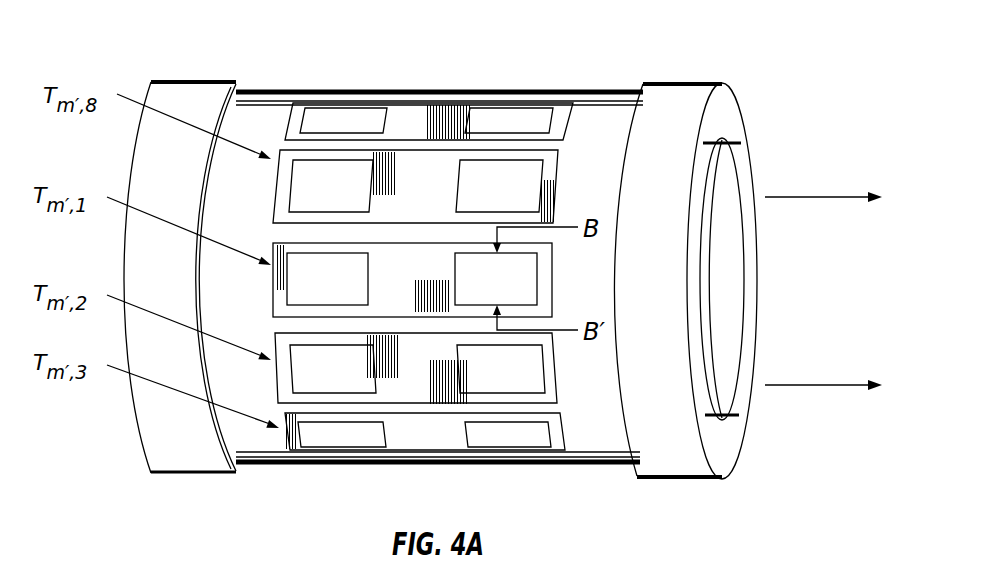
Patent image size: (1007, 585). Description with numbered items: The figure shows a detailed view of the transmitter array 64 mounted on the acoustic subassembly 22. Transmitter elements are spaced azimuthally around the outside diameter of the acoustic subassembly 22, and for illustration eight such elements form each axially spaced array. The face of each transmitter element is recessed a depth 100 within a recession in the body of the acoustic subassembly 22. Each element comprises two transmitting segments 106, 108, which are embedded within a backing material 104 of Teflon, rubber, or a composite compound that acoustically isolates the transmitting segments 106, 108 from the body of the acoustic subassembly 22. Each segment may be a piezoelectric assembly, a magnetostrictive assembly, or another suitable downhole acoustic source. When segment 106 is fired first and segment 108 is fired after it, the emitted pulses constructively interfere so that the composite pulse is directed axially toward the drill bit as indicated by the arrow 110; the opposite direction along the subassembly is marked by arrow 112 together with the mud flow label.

The transmitter array 64 is at (160, 58).
The acoustic subassembly 22 is at (685, 263).
The recess depth 100 is at (277, 122).
The backing material 104 is at (430, 293).
The transmitting segment 106 is at (350, 293).
The transmitting segment 108 is at (519, 293).
The arrow toward the drill bit 110 is at (823, 392).
The mud flow direction 112 is at (823, 193).